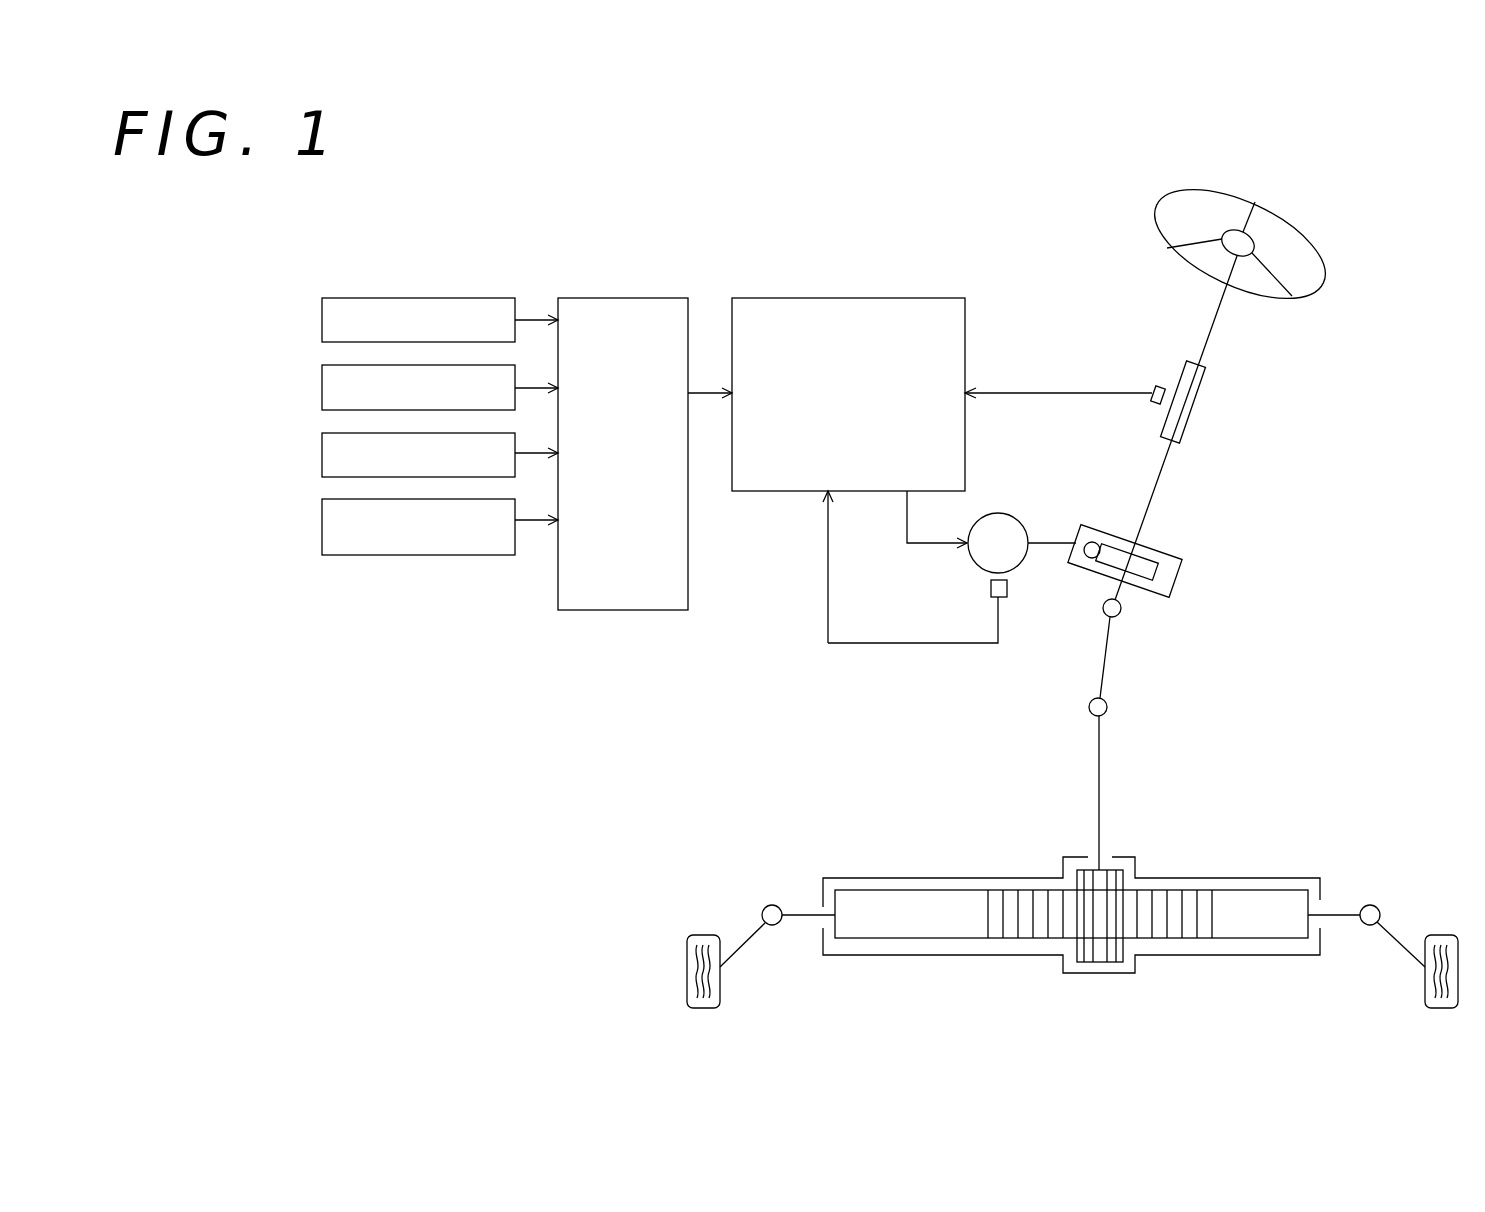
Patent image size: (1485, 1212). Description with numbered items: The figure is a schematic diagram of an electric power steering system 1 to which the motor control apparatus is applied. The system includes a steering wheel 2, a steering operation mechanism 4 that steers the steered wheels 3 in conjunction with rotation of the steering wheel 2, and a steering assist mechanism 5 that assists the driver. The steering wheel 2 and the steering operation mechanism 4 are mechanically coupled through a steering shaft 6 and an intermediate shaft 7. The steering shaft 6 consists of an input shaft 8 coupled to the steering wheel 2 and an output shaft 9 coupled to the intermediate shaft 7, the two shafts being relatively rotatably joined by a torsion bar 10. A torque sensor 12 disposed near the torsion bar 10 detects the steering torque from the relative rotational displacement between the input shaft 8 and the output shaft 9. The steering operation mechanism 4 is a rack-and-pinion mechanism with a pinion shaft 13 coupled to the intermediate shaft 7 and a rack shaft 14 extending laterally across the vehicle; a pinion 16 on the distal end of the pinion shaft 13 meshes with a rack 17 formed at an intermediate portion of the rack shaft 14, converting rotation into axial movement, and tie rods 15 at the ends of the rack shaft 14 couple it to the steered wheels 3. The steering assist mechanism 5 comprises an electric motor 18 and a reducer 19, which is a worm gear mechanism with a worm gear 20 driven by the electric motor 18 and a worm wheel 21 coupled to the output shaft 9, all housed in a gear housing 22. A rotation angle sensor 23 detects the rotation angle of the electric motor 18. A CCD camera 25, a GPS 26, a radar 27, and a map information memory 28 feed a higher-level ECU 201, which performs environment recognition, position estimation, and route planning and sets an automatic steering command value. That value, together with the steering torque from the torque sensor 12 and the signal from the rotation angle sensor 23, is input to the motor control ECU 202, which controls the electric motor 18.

The electric power steering system 1 is at (692, 225).
The steering wheel 2 is at (1288, 217).
The steered wheels 3 is at (700, 935).
The steering operation mechanism 4 is at (1157, 889).
The steering assist mechanism 5 is at (1120, 459).
The steering shaft 6 is at (1220, 313).
The intermediate shaft 7 is at (1107, 673).
The input shaft 8 is at (1203, 350).
The output shaft 9 is at (1162, 470).
The torsion bar 10 is at (1183, 407).
The torque sensor 12 is at (1155, 388).
The pinion shaft 13 is at (1103, 768).
The rack shaft 14 is at (1258, 943).
The tie rods 15 is at (748, 943).
The pinion 16 is at (1100, 955).
The rack 17 is at (1012, 933).
The electric motor 18 is at (997, 513).
The reducer 19 is at (1100, 527).
The worm gear 20 is at (1087, 557).
The worm wheel 21 is at (1143, 571).
The gear housing 22 is at (1145, 599).
The rotation angle sensor 23 is at (991, 583).
The CCD camera 25 is at (322, 320).
The GPS 26 is at (322, 388).
The radar 27 is at (322, 454).
The map information memory 28 is at (322, 521).
The higher-level ECU 201 is at (625, 298).
The motor control ECU 202 is at (966, 322).